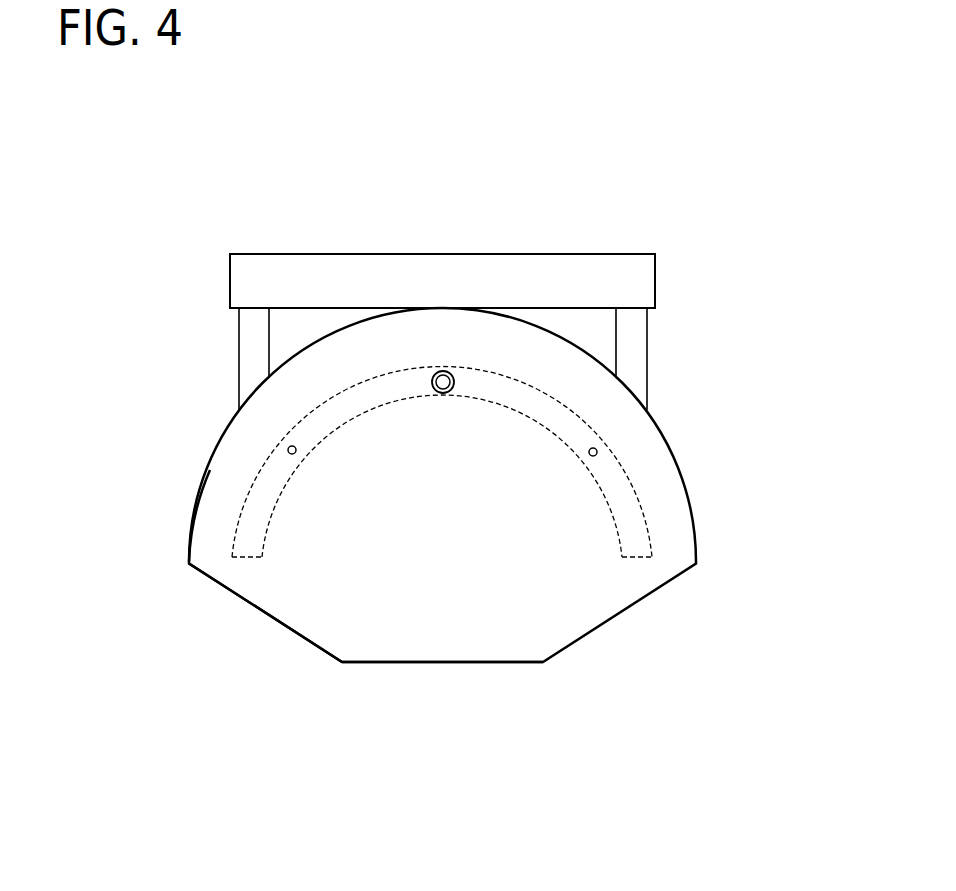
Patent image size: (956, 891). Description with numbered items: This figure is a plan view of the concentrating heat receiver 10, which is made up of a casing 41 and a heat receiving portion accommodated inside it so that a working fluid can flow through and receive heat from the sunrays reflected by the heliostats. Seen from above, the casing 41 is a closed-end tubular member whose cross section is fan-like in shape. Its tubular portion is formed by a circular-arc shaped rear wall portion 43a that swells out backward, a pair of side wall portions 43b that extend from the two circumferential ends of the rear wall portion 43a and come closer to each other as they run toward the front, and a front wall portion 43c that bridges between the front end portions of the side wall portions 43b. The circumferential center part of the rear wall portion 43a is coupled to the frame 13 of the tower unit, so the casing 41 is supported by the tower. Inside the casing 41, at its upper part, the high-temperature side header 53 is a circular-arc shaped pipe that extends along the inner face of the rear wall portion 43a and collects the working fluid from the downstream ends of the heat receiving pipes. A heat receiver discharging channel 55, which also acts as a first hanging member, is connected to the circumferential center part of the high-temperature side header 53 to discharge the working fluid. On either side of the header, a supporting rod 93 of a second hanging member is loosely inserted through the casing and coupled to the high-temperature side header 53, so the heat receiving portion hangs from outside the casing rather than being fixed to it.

The concentrating heat receiver 10 is at (698, 220).
The frame 13 is at (595, 254).
The casing 41 is at (681, 462).
The rear wall portion 43a is at (200, 492).
The side wall portion 43b is at (273, 618).
The front wall portion 43c is at (480, 663).
The high-temperature side header 53 is at (338, 408).
The heat receiver discharging channel 55 is at (441, 370).
The supporting rod 93 is at (287, 443).